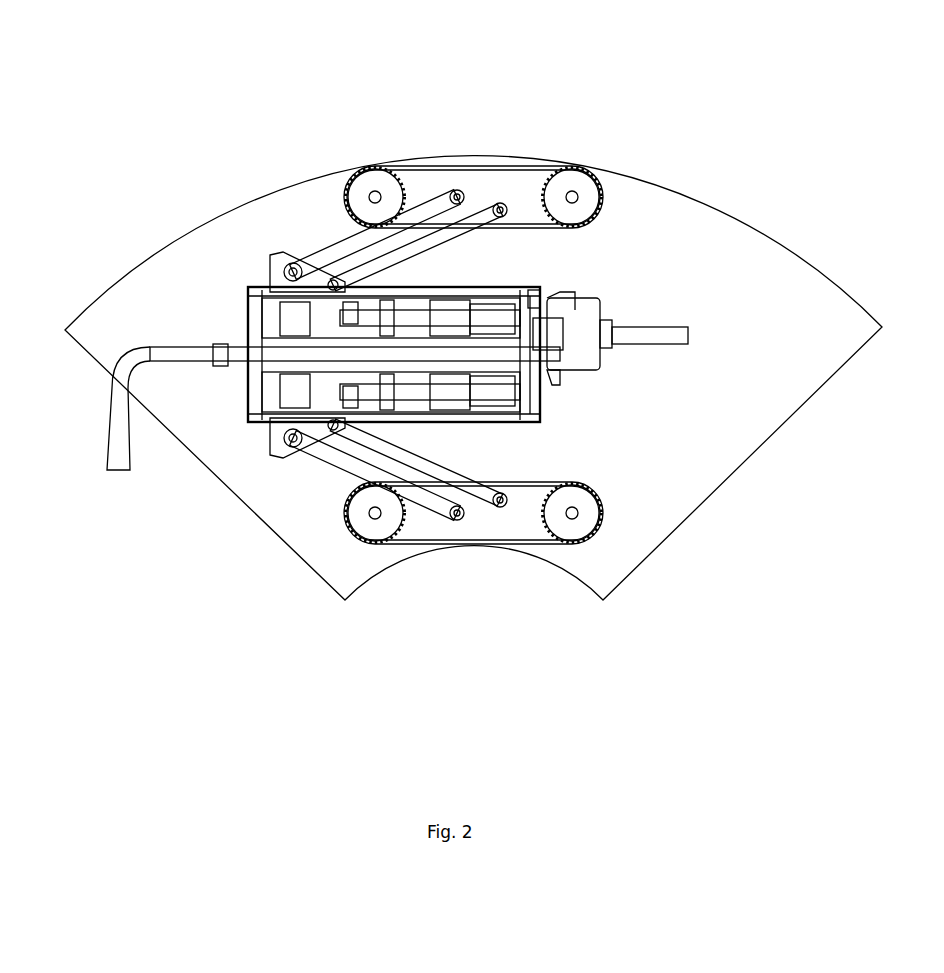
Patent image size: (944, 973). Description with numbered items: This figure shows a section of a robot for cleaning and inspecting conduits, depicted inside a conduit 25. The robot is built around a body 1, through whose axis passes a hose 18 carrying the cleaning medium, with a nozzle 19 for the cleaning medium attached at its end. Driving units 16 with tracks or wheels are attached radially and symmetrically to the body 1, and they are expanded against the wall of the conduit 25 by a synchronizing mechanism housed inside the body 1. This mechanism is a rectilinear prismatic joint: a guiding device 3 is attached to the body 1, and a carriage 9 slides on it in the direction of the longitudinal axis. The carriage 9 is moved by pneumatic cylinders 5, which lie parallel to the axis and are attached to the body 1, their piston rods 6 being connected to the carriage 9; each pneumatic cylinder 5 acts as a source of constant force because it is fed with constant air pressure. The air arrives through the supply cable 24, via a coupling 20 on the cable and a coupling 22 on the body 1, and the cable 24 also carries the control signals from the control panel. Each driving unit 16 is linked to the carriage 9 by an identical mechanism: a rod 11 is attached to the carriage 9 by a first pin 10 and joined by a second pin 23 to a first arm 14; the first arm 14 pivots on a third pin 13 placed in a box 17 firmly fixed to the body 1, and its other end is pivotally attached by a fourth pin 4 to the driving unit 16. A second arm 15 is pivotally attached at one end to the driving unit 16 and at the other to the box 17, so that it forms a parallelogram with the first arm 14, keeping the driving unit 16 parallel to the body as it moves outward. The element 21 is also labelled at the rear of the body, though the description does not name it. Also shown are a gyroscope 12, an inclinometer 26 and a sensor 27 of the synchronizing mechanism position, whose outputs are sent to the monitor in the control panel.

The body 1 is at (494, 426).
The guiding device 3 is at (293, 445).
The fourth pin 4 is at (458, 185).
The pneumatic cylinder 5 is at (454, 292).
The piston rod 6 is at (397, 290).
The carriage 9 is at (347, 440).
The first pin 10 is at (345, 302).
The rod 11 is at (325, 432).
The gyroscope 12 is at (533, 297).
The third pin 13 is at (298, 268).
The first arm 14 is at (333, 240).
The second arm 15 is at (375, 253).
The driving unit 16 is at (380, 168).
The box 17 is at (273, 462).
The hose 18 is at (240, 368).
The nozzle 19 is at (192, 367).
The coupling 20 is at (592, 295).
The connector 21 is at (558, 380).
The coupling 22 is at (555, 295).
The second pin 23 is at (282, 296).
The cable 24 is at (625, 322).
The conduit 25 is at (690, 193).
The inclinometer 26 is at (533, 425).
The sensor 27 is at (386, 410).